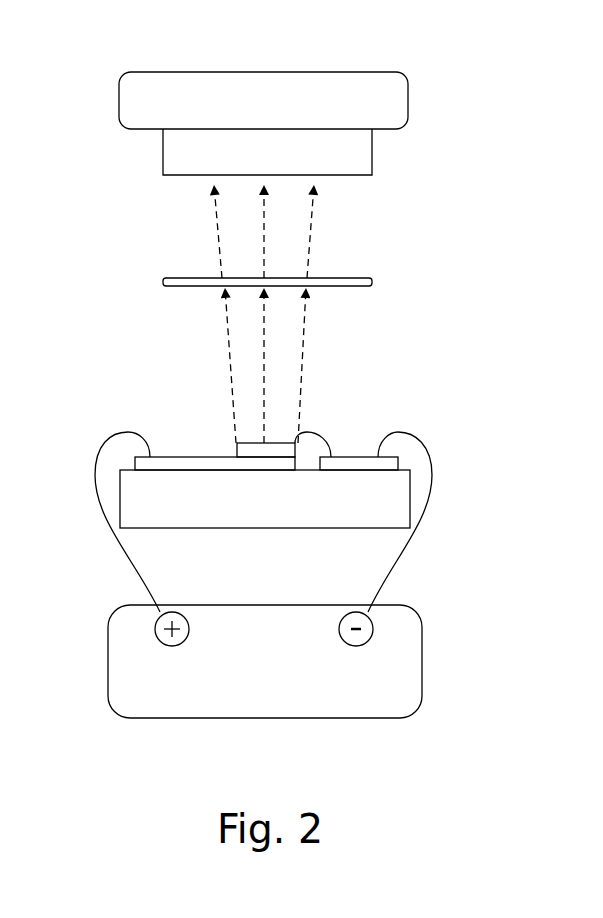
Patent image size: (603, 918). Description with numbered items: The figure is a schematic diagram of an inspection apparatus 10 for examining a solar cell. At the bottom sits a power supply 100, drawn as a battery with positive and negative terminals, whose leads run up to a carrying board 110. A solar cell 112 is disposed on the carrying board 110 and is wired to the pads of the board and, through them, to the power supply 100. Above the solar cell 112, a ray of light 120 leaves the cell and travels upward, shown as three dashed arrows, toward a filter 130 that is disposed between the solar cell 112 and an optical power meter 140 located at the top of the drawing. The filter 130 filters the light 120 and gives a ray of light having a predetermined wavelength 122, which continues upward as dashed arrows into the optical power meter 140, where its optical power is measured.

The inspection apparatus 10 is at (560, 60).
The power supply 100 is at (108, 662).
The carrying board 110 is at (172, 518).
The solar cell 112 is at (236, 450).
The ray of light 120 is at (301, 353).
The ray of light having a predetermined wavelength 122 is at (310, 243).
The filter 130 is at (163, 280).
The optical power meter 140 is at (119, 99).